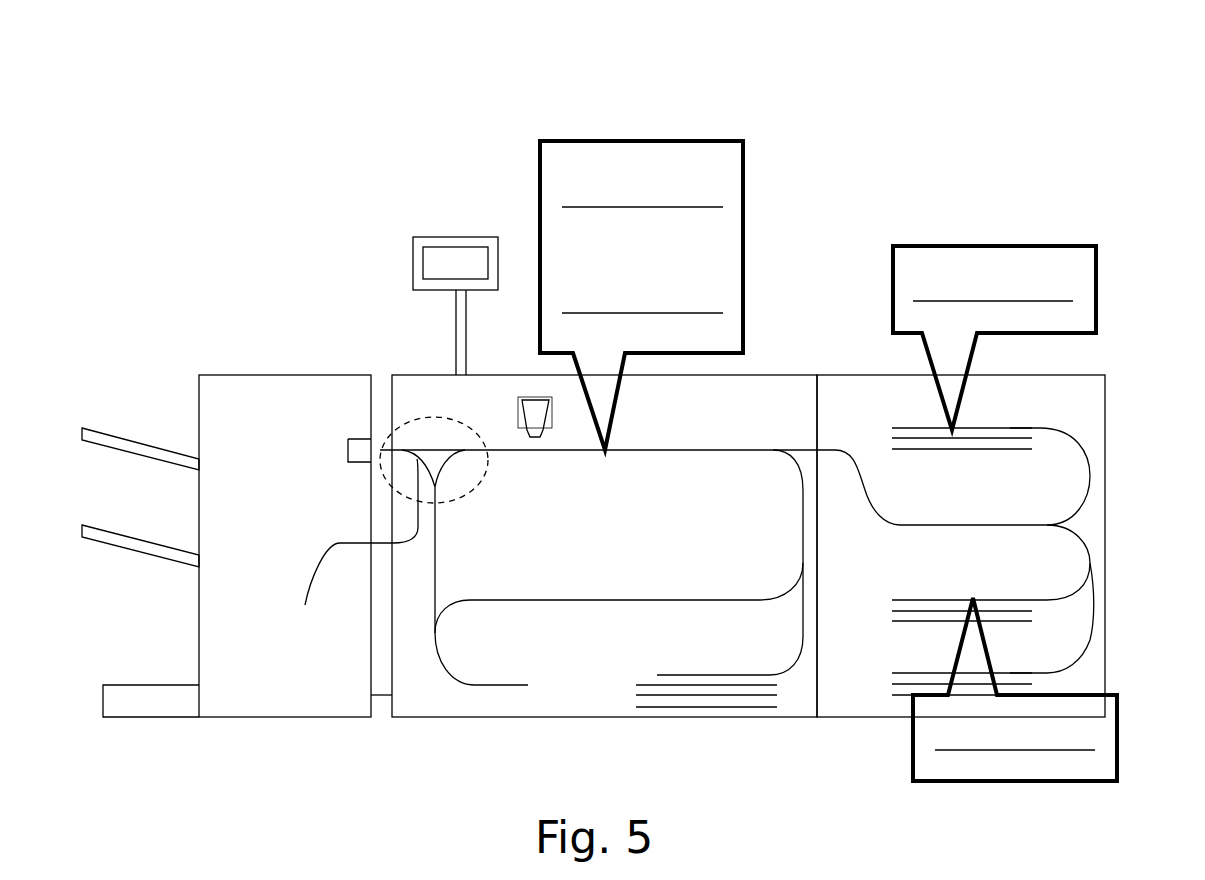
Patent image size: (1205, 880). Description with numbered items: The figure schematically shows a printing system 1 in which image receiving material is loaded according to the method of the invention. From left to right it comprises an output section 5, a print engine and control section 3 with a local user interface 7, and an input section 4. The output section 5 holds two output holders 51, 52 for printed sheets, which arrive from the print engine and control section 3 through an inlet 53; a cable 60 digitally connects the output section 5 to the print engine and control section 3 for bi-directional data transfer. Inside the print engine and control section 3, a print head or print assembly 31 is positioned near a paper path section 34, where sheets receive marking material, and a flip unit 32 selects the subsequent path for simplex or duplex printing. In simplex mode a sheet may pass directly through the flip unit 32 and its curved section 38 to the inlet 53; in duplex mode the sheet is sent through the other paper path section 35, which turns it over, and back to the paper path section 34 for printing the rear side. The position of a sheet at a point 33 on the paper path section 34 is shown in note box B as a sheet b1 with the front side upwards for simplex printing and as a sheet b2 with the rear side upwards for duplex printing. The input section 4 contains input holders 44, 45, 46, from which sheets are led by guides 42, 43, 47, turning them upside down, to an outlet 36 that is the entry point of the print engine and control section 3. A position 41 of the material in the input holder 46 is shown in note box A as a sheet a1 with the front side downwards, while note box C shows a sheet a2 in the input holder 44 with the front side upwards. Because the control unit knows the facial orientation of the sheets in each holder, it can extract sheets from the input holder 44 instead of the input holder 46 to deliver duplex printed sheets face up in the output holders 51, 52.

The printing system 1 is at (278, 145).
The print engine and control section 3 is at (418, 388).
The input section 4 is at (868, 388).
The output section 5 is at (258, 385).
The local user interface 7 is at (420, 240).
The print head or print assembly 31 is at (518, 400).
The flip unit 32 is at (472, 492).
The point on the paper path section 33 is at (605, 450).
The paper path section 34 is at (725, 447).
The other paper path section 35 is at (695, 598).
The entry point / outlet 36 is at (805, 449).
The curved section of the flip unit 38 is at (355, 544).
The position of the image receiving material 41 is at (903, 427).
The guide 42 is at (1090, 470).
The guide 43 is at (1087, 553).
The input holder 44 is at (892, 598).
The input holder 45 is at (892, 675).
The input holder 46 is at (892, 428).
The guide 47 is at (1093, 640).
The output holder 51 is at (120, 440).
The output holder 52 is at (118, 557).
The inlet 53 is at (358, 452).
The cable 60 is at (383, 697).
The note box A is at (1096, 262).
The note box B is at (538, 190).
The note box C is at (1117, 745).
The sheet a1 is at (948, 301).
The sheet a2 is at (970, 750).
The sheet b1 is at (692, 206).
The sheet b2 is at (640, 313).